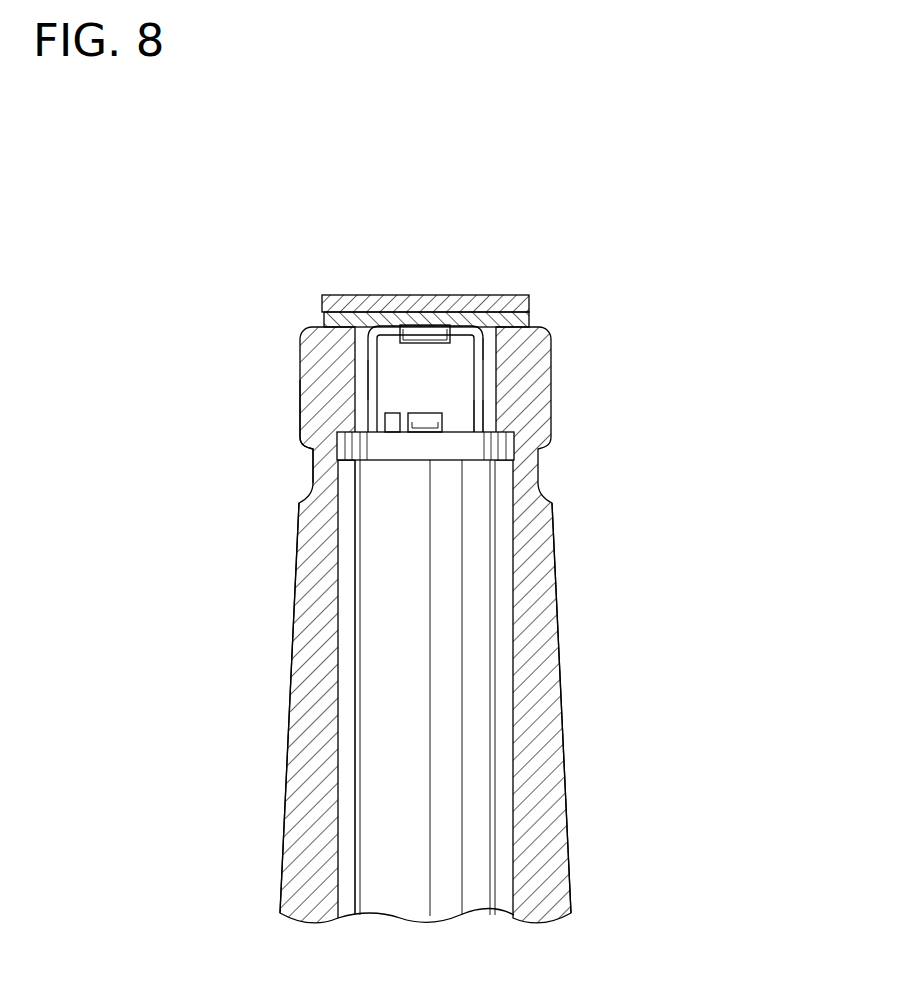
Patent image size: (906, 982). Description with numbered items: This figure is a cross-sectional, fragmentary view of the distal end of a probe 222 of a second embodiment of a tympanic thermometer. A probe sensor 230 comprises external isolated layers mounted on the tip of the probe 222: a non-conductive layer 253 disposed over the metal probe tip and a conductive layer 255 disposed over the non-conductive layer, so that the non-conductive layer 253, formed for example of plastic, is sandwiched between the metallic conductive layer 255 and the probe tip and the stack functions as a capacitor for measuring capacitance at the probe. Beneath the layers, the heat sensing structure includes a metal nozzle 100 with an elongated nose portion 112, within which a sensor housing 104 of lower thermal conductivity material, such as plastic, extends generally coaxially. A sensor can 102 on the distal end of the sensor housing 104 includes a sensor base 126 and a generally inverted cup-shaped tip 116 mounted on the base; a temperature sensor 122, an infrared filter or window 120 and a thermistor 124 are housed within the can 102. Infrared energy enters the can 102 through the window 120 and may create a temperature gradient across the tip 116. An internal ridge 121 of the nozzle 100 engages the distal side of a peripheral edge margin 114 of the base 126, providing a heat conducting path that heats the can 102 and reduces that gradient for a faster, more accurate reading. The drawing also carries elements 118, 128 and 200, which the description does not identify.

The nozzle 100 is at (297, 870).
The sensor can 102 is at (366, 374).
The sensor housing 104 is at (450, 655).
The elongated nose portion 112 is at (310, 442).
The peripheral edge margin 114 is at (508, 422).
The tip 116 is at (392, 330).
The inner wall 118 is at (346, 778).
The infrared filter or window 120 is at (423, 337).
The internal ridge 121 is at (497, 436).
The temperature sensor 122 is at (428, 413).
The thermistor 124 is at (395, 413).
The sensor base 126 is at (388, 460).
The gap 128 is at (490, 356).
The container body 200 is at (303, 723).
The probe 222 is at (559, 539).
The probe sensor 230 is at (436, 256).
The non-conductive layer 253 is at (323, 320).
The conductive layer 255 is at (483, 300).